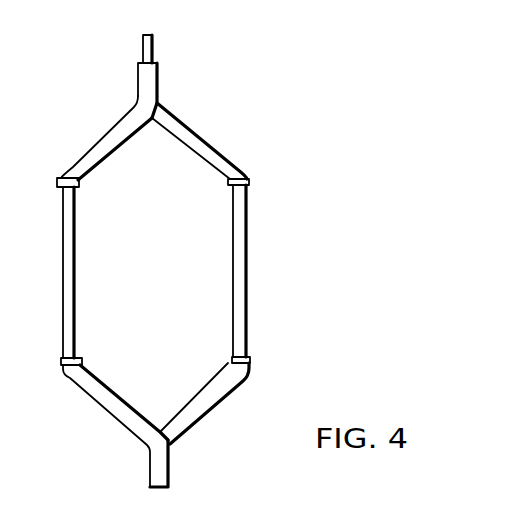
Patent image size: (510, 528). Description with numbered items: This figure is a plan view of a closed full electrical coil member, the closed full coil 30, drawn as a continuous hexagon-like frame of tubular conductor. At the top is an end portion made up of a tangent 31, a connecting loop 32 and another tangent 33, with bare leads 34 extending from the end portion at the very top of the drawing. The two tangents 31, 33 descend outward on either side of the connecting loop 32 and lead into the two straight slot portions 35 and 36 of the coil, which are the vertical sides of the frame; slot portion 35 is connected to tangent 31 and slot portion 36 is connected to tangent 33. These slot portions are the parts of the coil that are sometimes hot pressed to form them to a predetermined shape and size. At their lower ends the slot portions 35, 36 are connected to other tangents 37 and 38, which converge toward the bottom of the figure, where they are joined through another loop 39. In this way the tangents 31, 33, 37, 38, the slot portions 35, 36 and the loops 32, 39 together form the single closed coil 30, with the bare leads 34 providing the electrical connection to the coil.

The closed full coil 30 is at (165, 269).
The tangent 31 is at (216, 145).
The connecting loop 32 is at (158, 88).
The tangent 33 is at (97, 168).
The bare leads 34 is at (153, 47).
The slot portion 35 is at (247, 257).
The slot portion 36 is at (75, 297).
The tangent 37 is at (215, 405).
The tangent 38 is at (87, 398).
The loop 39 is at (162, 475).